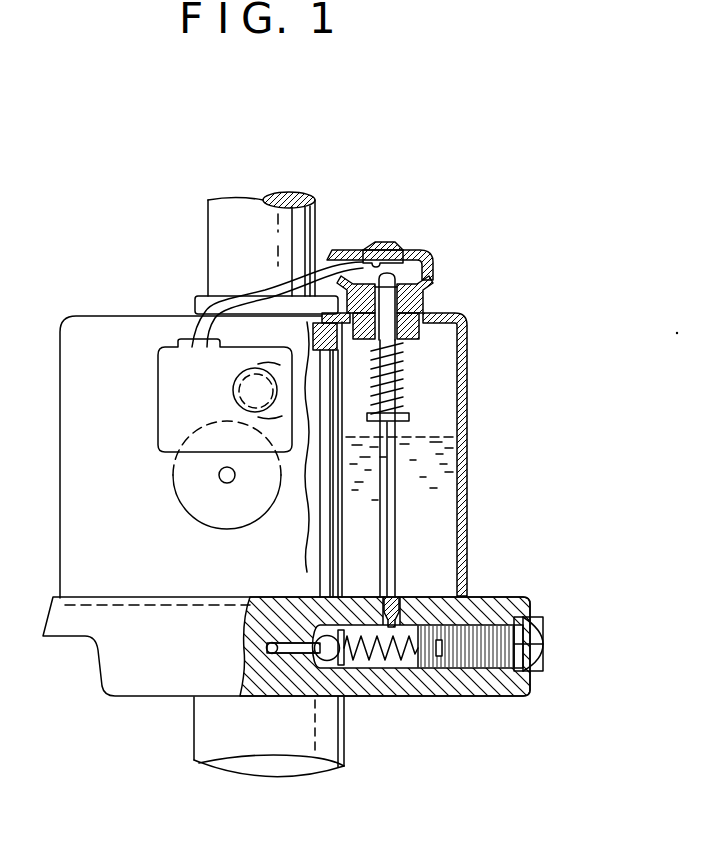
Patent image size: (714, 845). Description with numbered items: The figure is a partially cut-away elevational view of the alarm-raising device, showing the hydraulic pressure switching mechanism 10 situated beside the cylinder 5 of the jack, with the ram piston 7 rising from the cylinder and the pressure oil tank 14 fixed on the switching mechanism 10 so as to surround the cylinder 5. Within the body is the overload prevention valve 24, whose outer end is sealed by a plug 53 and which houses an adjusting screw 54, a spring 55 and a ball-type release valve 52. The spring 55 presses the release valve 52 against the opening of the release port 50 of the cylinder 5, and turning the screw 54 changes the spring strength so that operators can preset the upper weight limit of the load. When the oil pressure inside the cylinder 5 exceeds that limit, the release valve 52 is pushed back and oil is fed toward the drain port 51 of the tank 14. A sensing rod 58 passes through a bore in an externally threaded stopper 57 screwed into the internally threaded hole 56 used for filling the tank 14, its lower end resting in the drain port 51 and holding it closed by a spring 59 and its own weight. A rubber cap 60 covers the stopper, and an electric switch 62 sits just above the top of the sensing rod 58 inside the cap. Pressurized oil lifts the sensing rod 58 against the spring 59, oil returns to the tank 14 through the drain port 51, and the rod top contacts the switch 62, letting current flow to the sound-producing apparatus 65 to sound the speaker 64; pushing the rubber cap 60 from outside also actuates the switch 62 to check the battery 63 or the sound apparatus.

The cylinder 5 is at (200, 735).
The ram piston 7 is at (217, 244).
The hydraulic pressure switching mechanism 10 is at (142, 688).
The pressure oil tank 14 is at (470, 488).
The overload prevention valve 24 is at (550, 650).
The release port 50 is at (272, 642).
The drain port 51 is at (403, 598).
The ball-type release valve 52 is at (318, 656).
The plug 53 is at (536, 674).
The adjusting screw 54 is at (452, 670).
The spring 55 is at (377, 658).
The internally threaded hole 56 is at (427, 333).
The externally threaded stopper 57 is at (430, 273).
The sensing rod 58 is at (395, 500).
The spring 59 is at (401, 387).
The rubber cap 60 is at (434, 268).
The electric switch 62 is at (399, 249).
The battery 63 is at (236, 384).
The speaker 64 is at (186, 478).
The sound-producing apparatus 65 is at (178, 405).